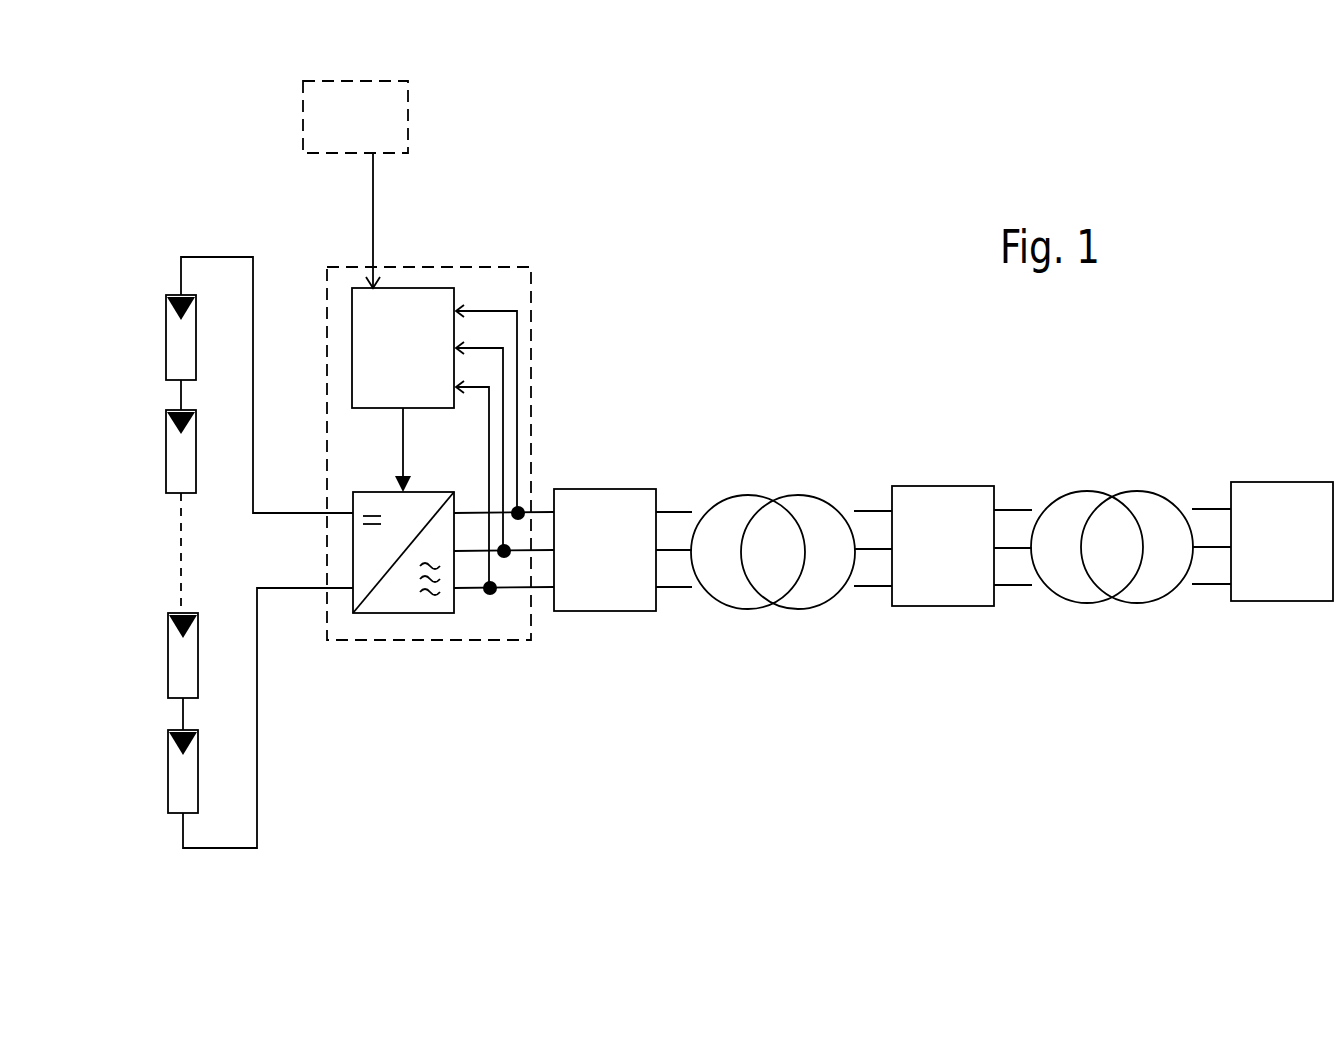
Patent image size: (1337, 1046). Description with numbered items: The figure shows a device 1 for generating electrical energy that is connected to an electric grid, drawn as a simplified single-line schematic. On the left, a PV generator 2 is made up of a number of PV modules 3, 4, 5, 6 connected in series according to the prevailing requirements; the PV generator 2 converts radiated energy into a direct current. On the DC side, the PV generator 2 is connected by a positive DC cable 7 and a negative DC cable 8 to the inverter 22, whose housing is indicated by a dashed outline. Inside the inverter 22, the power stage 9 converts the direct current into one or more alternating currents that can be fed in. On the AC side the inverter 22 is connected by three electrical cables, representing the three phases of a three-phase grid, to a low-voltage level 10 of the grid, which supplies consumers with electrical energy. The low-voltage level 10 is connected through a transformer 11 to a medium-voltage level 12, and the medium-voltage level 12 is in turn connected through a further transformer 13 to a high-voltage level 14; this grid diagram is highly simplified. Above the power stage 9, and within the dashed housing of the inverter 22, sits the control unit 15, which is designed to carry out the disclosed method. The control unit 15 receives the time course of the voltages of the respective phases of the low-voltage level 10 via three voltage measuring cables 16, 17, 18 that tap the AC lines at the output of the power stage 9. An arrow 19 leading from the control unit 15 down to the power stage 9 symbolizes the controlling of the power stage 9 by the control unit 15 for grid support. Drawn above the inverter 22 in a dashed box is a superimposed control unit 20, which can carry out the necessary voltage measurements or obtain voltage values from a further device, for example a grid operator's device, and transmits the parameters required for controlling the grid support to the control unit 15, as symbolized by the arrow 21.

The device for generating electrical energy 1 is at (791, 764).
The PV generator 2 is at (232, 552).
The PV module 3 is at (197, 328).
The PV module 4 is at (166, 466).
The PV module 5 is at (199, 641).
The PV module 6 is at (168, 779).
The positive DC cable 7 is at (255, 328).
The negative DC cable 8 is at (258, 774).
The power stage 9 is at (448, 614).
The low-voltage level 10 is at (628, 612).
The transformer 11 is at (803, 611).
The medium-voltage level 12 is at (975, 608).
The further transformer 13 is at (1145, 604).
The high-voltage level 14 is at (1320, 603).
The control unit 15 is at (389, 288).
The voltage measuring cable 16 is at (514, 307).
The voltage measuring cable 17 is at (506, 353).
The voltage measuring cable 18 is at (491, 465).
The arrow 19 is at (405, 449).
The superimposed control unit 20 is at (410, 150).
The arrow 21 is at (372, 232).
The inverter 22 is at (475, 642).